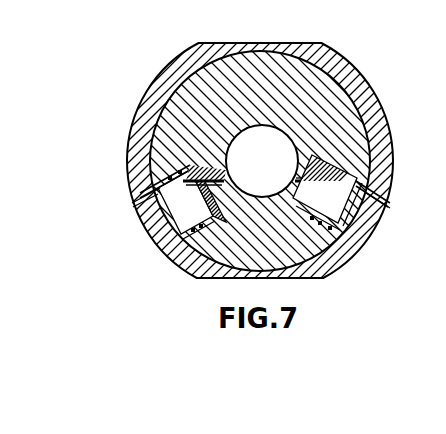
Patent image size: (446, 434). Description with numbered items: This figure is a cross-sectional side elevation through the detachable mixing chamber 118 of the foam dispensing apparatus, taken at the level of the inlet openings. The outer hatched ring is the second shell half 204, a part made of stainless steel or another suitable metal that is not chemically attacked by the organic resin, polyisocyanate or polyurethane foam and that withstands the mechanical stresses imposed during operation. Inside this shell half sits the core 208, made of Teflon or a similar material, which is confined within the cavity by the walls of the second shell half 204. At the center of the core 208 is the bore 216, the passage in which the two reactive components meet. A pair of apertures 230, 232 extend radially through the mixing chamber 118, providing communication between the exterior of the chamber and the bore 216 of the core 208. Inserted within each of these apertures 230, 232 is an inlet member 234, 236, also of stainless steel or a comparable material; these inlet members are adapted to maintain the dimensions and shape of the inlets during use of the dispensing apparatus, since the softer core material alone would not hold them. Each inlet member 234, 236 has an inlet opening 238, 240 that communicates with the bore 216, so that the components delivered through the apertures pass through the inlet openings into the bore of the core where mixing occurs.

The mixing chamber 118 is at (223, 157).
The second shell half 204 is at (180, 64).
The core 208 is at (308, 68).
The bore 216 is at (277, 128).
The aperture 230 is at (364, 245).
The aperture 232 is at (156, 217).
The inlet member 234 is at (345, 156).
The inlet member 236 is at (160, 146).
The inlet opening 238 is at (300, 181).
The inlet opening 240 is at (222, 183).